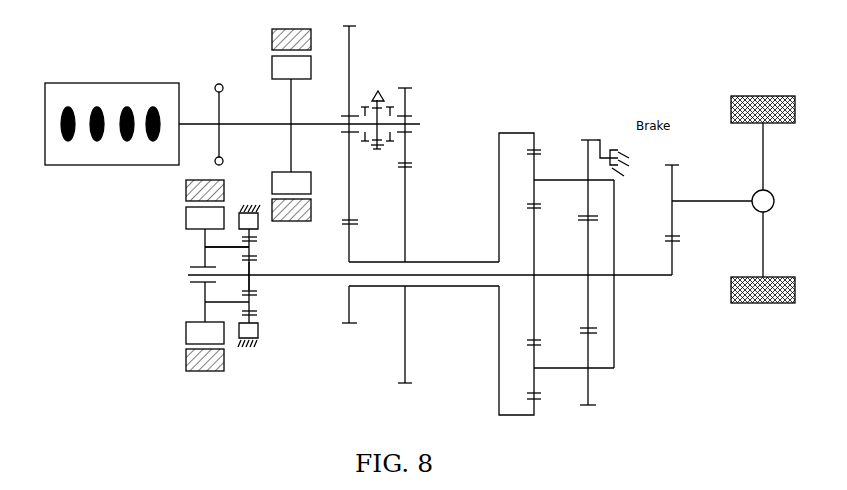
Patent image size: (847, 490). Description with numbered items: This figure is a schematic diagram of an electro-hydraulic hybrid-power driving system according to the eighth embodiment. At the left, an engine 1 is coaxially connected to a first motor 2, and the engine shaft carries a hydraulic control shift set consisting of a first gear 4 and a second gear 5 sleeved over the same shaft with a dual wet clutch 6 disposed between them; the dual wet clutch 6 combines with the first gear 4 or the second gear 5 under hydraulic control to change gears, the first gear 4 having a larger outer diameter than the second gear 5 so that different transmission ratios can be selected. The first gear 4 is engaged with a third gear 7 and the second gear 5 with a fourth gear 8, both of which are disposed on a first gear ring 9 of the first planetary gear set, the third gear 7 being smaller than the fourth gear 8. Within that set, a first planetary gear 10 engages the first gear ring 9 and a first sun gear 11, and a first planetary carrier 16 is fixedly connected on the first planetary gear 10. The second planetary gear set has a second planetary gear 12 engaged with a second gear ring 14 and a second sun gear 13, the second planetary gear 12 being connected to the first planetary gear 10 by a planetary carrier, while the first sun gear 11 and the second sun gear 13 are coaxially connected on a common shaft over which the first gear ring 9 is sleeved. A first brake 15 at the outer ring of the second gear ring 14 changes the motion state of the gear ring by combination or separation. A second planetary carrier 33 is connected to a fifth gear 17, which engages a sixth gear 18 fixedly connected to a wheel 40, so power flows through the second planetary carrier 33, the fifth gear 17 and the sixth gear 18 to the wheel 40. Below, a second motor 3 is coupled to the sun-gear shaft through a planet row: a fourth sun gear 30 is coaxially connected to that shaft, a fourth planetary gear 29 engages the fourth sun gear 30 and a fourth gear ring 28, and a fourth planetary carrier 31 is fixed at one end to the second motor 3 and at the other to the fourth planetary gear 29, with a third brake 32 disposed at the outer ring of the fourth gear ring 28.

The engine 1 is at (45, 165).
The first motor 2 is at (272, 50).
The second motor 3 is at (186, 371).
The first gear 4 is at (350, 82).
The second gear 5 is at (407, 105).
The dual wet clutch 6 is at (376, 98).
The third gear 7 is at (351, 249).
The fourth gear 8 is at (406, 234).
The first gear ring 9 is at (513, 133).
The first planetary gear 10 is at (535, 173).
The first sun gear 11 is at (535, 256).
The second planetary gear 12 is at (587, 193).
The second sun gear 13 is at (587, 289).
The second gear ring 14 is at (598, 137).
The first brake 15 is at (622, 158).
The first planetary carrier 16 is at (583, 178).
The fifth gear 17 is at (675, 264).
The sixth gear 18 is at (675, 191).
The fourth gear ring 28 is at (251, 234).
The fourth planetary gear 29 is at (252, 250).
The fourth sun gear 30 is at (250, 271).
The fourth planetary carrier 31 is at (236, 249).
The third brake 32 is at (250, 206).
The second planetary carrier 33 is at (617, 215).
The wheel 40 is at (793, 97).